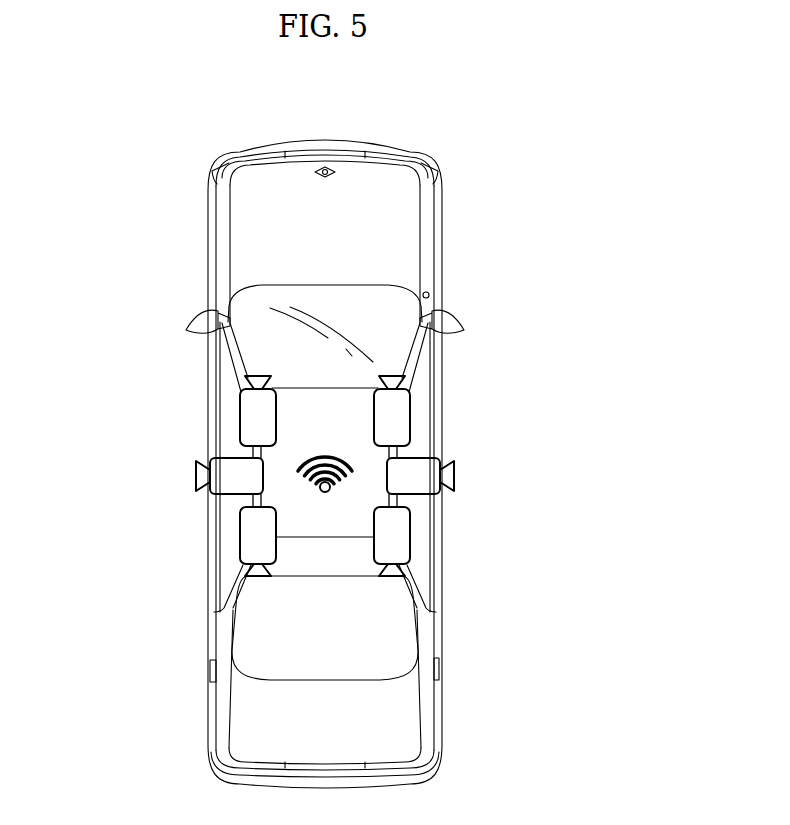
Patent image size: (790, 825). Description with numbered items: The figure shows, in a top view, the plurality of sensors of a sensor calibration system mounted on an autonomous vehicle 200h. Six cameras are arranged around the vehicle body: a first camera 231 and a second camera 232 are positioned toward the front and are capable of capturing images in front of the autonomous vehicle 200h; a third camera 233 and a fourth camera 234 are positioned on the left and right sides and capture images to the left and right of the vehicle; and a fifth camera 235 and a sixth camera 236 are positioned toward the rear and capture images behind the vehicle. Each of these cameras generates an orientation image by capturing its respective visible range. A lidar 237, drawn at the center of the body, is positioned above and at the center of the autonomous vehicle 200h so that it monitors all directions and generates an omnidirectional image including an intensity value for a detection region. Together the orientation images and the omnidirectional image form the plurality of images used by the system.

The autonomous vehicle 200h is at (248, 213).
The first camera 231 is at (240, 421).
The second camera 232 is at (410, 418).
The third camera 233 is at (195, 475).
The fourth camera 234 is at (455, 472).
The fifth camera 235 is at (240, 531).
The sixth camera 236 is at (410, 530).
The lidar 237 is at (327, 452).